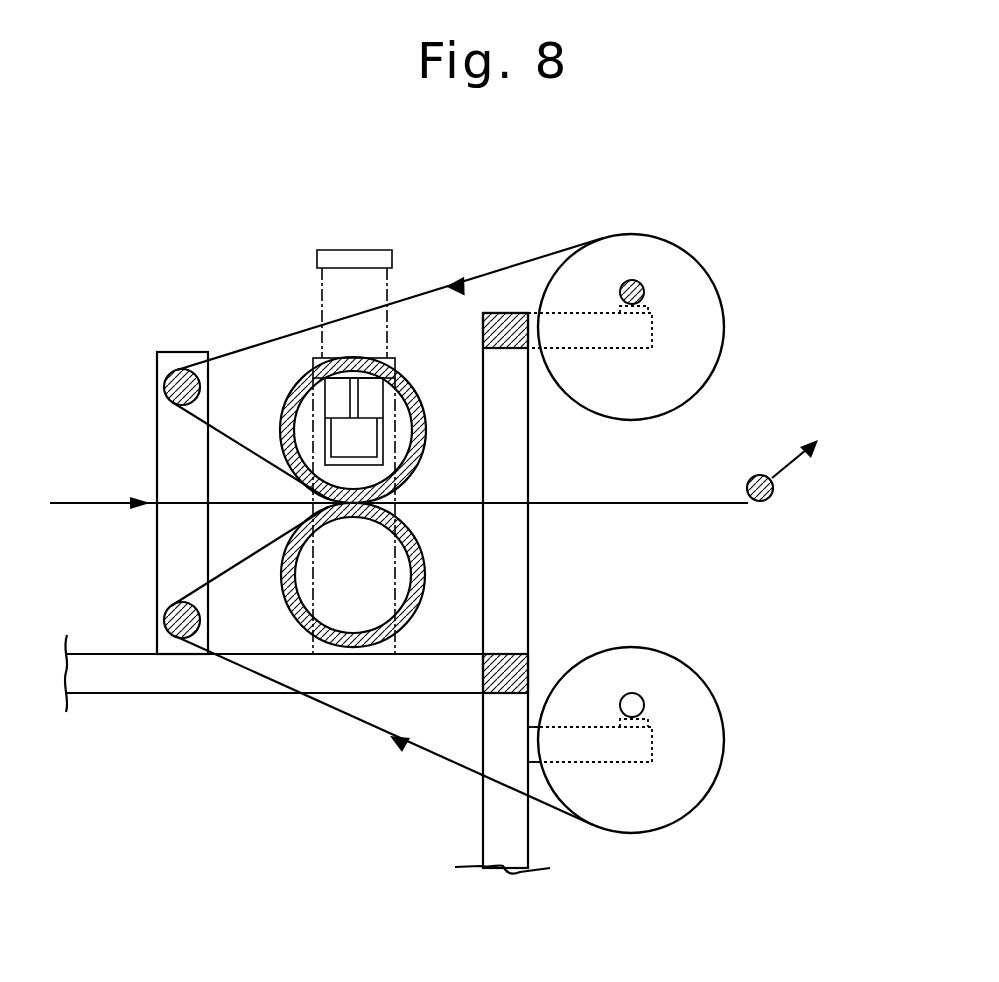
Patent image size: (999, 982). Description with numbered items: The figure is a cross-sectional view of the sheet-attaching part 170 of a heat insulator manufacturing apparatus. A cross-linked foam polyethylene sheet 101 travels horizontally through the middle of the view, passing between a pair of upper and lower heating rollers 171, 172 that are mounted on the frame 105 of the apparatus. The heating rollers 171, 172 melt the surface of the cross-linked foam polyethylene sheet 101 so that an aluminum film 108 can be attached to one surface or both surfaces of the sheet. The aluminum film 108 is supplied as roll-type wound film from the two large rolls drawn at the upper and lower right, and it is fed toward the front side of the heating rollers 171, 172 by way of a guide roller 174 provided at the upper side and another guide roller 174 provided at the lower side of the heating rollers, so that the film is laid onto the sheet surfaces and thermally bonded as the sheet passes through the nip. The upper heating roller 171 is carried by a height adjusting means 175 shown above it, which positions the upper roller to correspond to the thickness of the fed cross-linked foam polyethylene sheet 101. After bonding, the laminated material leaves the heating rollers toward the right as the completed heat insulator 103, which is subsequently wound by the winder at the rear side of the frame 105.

The cross-linked foam polyethylene sheet 101 is at (70, 500).
The completed heat insulator 103 is at (798, 470).
The frame 105 is at (105, 683).
The aluminum film 108 is at (710, 318).
The sheet-attaching part 170 is at (740, 592).
The upper heating roller 171 is at (425, 448).
The lower heating roller 172 is at (427, 573).
The guide roller 174 is at (177, 375).
The height adjusting means 175 is at (338, 250).